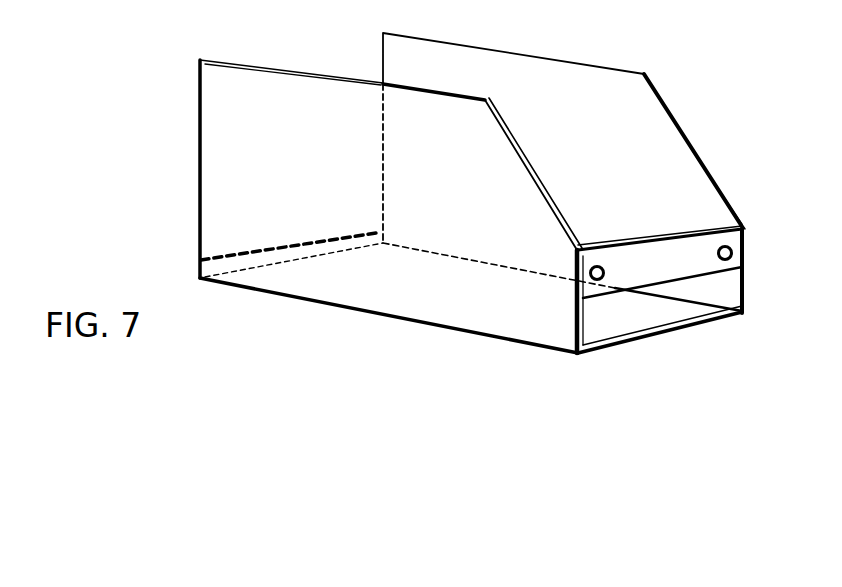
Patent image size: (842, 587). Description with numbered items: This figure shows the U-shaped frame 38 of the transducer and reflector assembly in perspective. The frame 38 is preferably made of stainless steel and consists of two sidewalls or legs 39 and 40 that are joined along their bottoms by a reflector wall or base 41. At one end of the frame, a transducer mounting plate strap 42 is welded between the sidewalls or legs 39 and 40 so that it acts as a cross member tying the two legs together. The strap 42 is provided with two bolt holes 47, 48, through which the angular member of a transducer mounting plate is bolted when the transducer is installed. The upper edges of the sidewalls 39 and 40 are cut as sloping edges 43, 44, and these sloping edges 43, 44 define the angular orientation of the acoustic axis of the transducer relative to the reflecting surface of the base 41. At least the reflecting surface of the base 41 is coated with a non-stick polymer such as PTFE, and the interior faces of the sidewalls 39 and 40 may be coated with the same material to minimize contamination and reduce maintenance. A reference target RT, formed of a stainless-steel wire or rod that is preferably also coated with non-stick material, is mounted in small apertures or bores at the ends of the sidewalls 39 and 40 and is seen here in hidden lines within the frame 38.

The U-shaped frame 38 is at (475, 188).
The sidewall or leg 39 is at (507, 52).
The sidewall or leg 40 is at (298, 82).
The reflector wall or base 41 is at (450, 308).
The transducer mounting plate strap 42 is at (695, 237).
The sloping edge 43 is at (677, 117).
The sloping edge 44 is at (540, 190).
The bolt hole 47 is at (731, 259).
The bolt hole 48 is at (670, 188).
The reference target RT is at (256, 229).